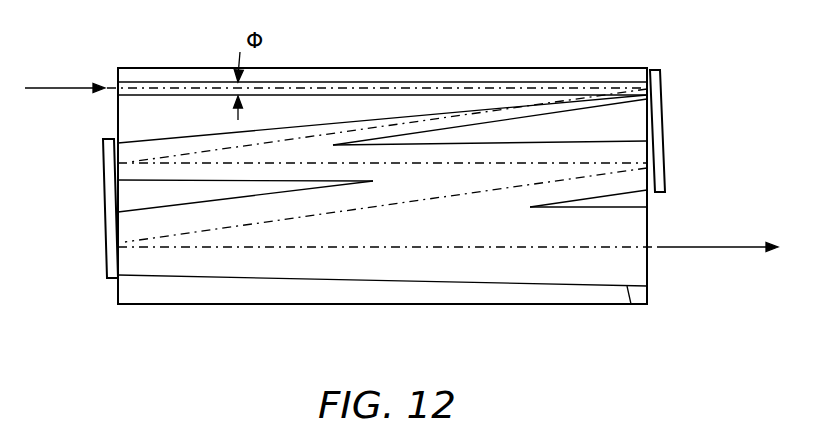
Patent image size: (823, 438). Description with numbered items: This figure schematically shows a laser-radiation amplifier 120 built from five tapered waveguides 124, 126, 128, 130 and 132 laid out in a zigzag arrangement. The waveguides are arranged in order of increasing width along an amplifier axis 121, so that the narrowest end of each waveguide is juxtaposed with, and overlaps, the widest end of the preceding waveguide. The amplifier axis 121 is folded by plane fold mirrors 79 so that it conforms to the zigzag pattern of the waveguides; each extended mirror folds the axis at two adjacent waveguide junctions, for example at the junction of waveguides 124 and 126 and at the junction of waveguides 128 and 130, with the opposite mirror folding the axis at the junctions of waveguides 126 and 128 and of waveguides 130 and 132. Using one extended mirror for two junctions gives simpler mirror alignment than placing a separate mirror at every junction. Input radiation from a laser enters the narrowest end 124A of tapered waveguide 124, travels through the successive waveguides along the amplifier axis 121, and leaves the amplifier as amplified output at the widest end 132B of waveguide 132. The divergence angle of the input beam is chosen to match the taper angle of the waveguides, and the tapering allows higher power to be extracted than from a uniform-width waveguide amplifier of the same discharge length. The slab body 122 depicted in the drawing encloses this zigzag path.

The laser amplifier 120 is at (478, 343).
The slab gain medium 122 is at (294, 313).
The tapered waveguide 124 is at (328, 74).
The narrowest end 124A is at (153, 81).
The amplifier axis 121 is at (205, 84).
The tapered waveguide 126 is at (360, 106).
The tapered waveguide 128 is at (581, 126).
The tapered waveguide 130 is at (616, 208).
The tapered waveguide 132 is at (198, 286).
The widest end 132B is at (631, 304).
The plane fold mirror 79 is at (112, 245).